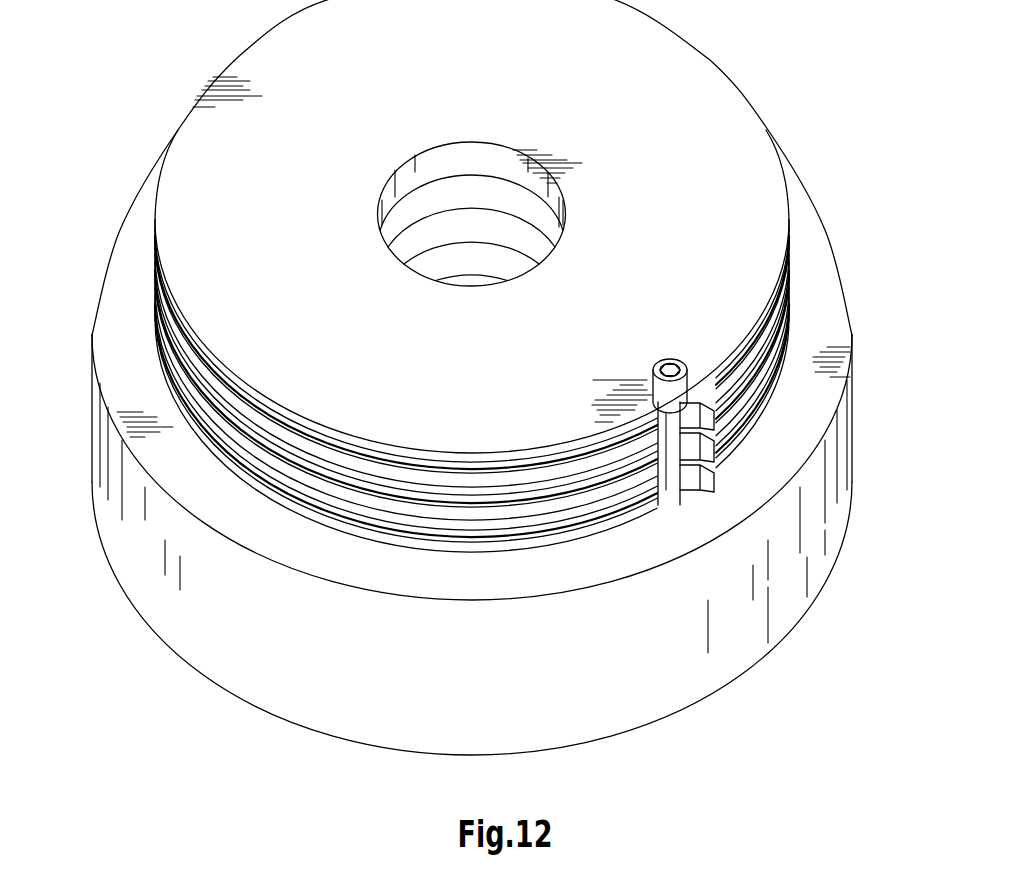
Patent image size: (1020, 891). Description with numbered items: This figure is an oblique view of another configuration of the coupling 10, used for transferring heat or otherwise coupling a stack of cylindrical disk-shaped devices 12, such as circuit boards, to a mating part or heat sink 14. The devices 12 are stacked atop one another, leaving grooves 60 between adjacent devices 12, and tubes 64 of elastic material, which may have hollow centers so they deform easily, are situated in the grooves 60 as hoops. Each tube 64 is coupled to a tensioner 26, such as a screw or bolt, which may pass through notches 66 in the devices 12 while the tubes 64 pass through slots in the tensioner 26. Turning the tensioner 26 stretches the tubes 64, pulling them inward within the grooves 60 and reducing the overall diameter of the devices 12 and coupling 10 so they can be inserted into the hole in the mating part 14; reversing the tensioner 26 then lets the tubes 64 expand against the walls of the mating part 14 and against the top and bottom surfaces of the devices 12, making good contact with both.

The coupling 10 is at (466, 377).
The cylindrical disk-shaped devices 12 is at (529, 398).
The mating part or heat sink 14 is at (722, 647).
The tensioner 26 is at (683, 392).
The grooves 60 is at (705, 429).
The tubes of elastic material 64 is at (513, 537).
The notches 66 is at (666, 355).